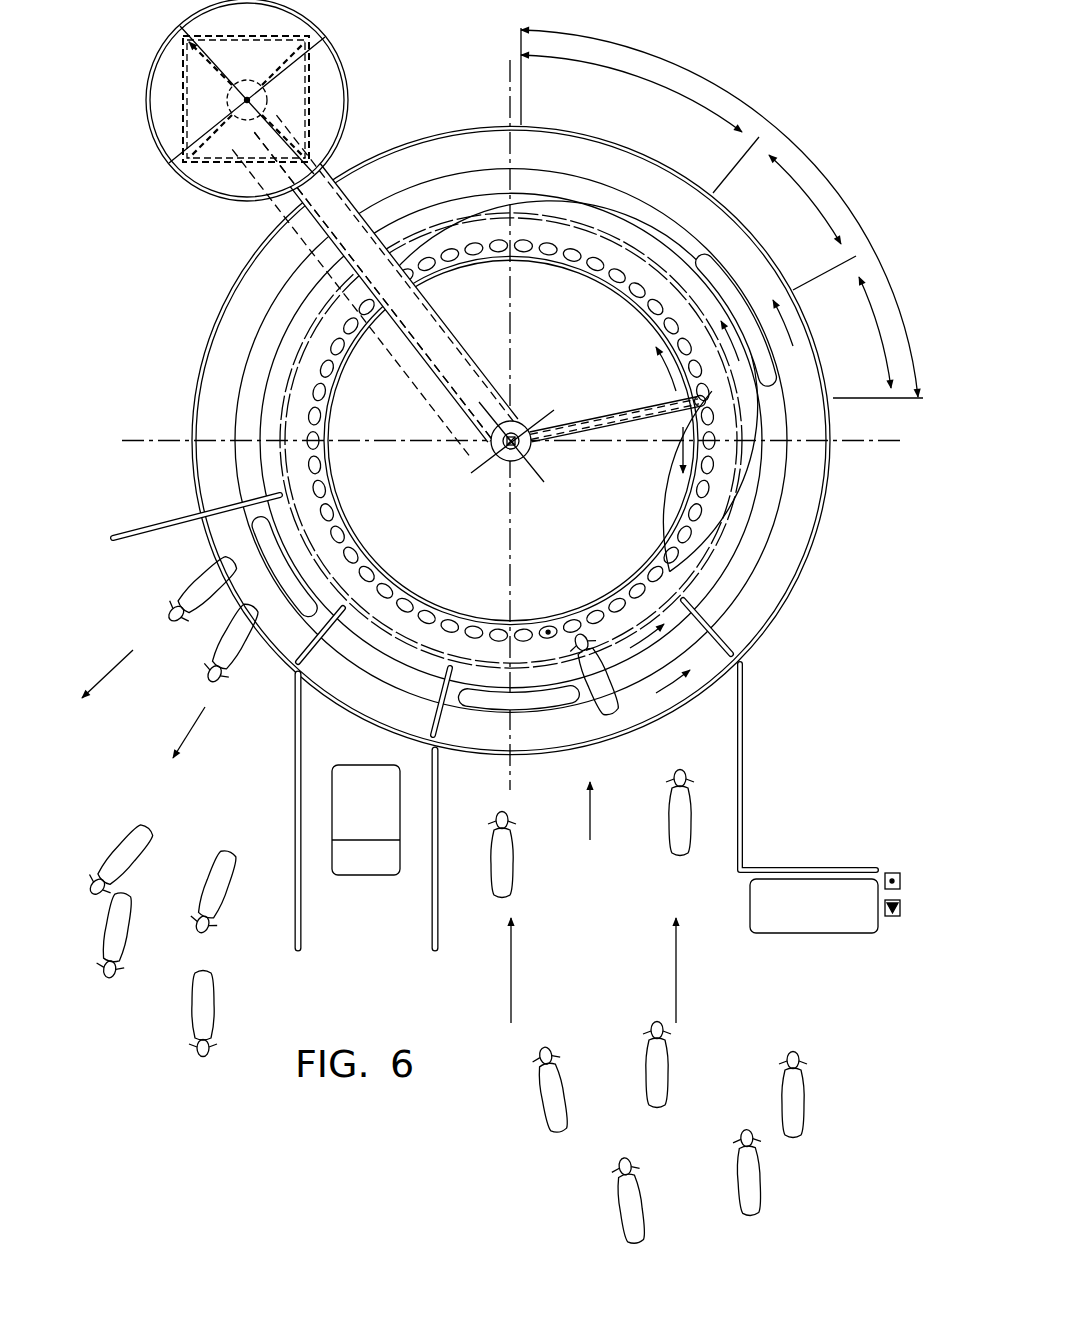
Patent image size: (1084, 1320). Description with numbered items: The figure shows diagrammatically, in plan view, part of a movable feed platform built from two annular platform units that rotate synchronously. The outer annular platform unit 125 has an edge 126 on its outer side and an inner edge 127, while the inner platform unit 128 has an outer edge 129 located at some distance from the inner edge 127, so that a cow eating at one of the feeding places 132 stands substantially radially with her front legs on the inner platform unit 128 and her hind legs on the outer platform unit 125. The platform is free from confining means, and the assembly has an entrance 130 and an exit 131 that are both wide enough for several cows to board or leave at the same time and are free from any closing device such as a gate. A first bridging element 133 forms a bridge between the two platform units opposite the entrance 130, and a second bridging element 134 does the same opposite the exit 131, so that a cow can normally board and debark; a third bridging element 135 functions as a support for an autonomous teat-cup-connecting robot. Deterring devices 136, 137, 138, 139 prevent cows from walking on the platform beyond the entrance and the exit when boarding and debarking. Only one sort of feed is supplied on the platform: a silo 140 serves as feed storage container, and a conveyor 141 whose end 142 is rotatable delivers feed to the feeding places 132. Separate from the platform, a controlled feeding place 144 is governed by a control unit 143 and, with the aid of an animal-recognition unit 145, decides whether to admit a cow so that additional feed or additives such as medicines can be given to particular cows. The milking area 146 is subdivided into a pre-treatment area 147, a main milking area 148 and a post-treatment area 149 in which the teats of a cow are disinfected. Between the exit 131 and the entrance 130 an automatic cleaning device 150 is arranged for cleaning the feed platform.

The outer annular platform unit 125 is at (776, 571).
The edge 126 is at (774, 608).
The inner edge 127 is at (776, 524).
The inner platform unit 128 is at (712, 490).
The outer edge 129 is at (756, 484).
The entrance 130 is at (626, 1009).
The exit 131 is at (258, 839).
The feeding places 132 is at (550, 626).
The first bridging element 133 is at (567, 714).
The second bridging element 134 is at (240, 541).
The third bridging element 135 is at (774, 388).
The deterring device 136 is at (738, 663).
The deterring device 137 is at (446, 748).
The deterring device 138 is at (299, 663).
The deterring device 139 is at (214, 514).
The silo 140 is at (346, 70).
The conveyor 141 is at (452, 333).
The end 142 is at (574, 420).
The control unit 143 is at (898, 915).
The feeding place 144 is at (800, 922).
The animal-recognition unit 145 is at (892, 881).
The milking area 146 is at (680, 124).
The pre-treatment area 147 is at (862, 332).
The main milking area 148 is at (804, 222).
The post-treatment area 149 is at (722, 213).
The automatic cleaning device 150 is at (366, 820).